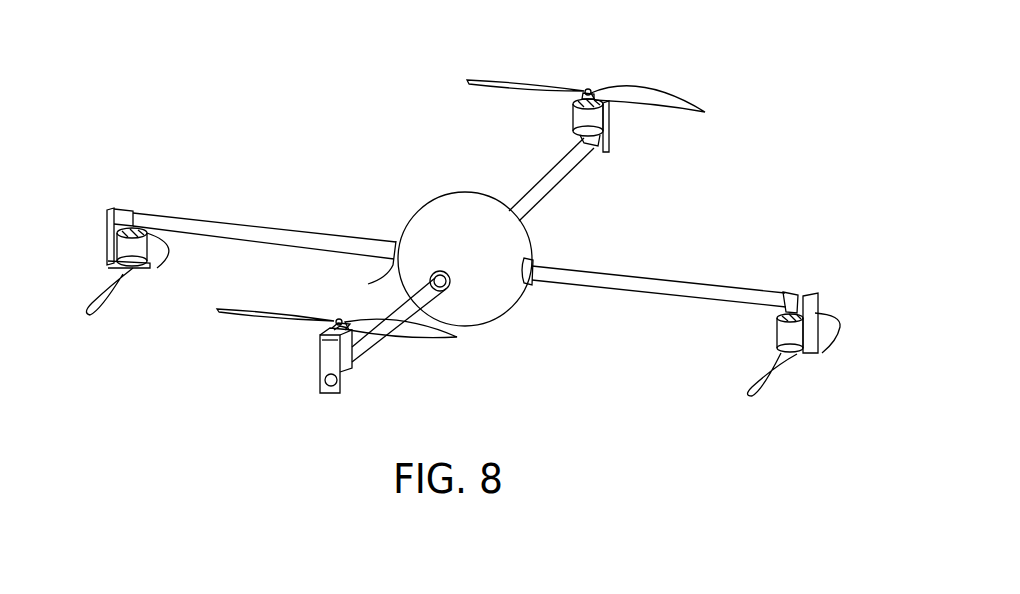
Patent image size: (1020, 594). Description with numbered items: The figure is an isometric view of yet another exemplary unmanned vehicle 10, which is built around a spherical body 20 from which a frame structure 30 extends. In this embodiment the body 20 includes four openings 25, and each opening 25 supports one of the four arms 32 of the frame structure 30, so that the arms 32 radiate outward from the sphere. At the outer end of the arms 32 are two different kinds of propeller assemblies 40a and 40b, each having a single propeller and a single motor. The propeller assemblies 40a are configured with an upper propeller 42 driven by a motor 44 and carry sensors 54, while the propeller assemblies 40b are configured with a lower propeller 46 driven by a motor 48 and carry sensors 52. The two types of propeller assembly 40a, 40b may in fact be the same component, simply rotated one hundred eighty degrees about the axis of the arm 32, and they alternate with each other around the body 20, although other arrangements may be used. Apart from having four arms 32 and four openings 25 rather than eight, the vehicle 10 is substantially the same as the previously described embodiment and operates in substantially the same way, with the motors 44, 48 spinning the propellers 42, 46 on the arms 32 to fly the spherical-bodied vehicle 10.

The vehicle 10 is at (773, 124).
The spherical body 20 is at (444, 195).
The openings 25 is at (431, 276).
The frame structure 30 is at (621, 259).
The arms 32 is at (553, 180).
The propeller assembly 40a is at (612, 78).
The propeller assembly 40b is at (94, 218).
The propeller 42 is at (660, 101).
The motor 44 is at (598, 121).
The propeller 46 is at (103, 304).
The motor 48 is at (787, 333).
The sensors 52 is at (815, 353).
The sensors 54 is at (318, 352).